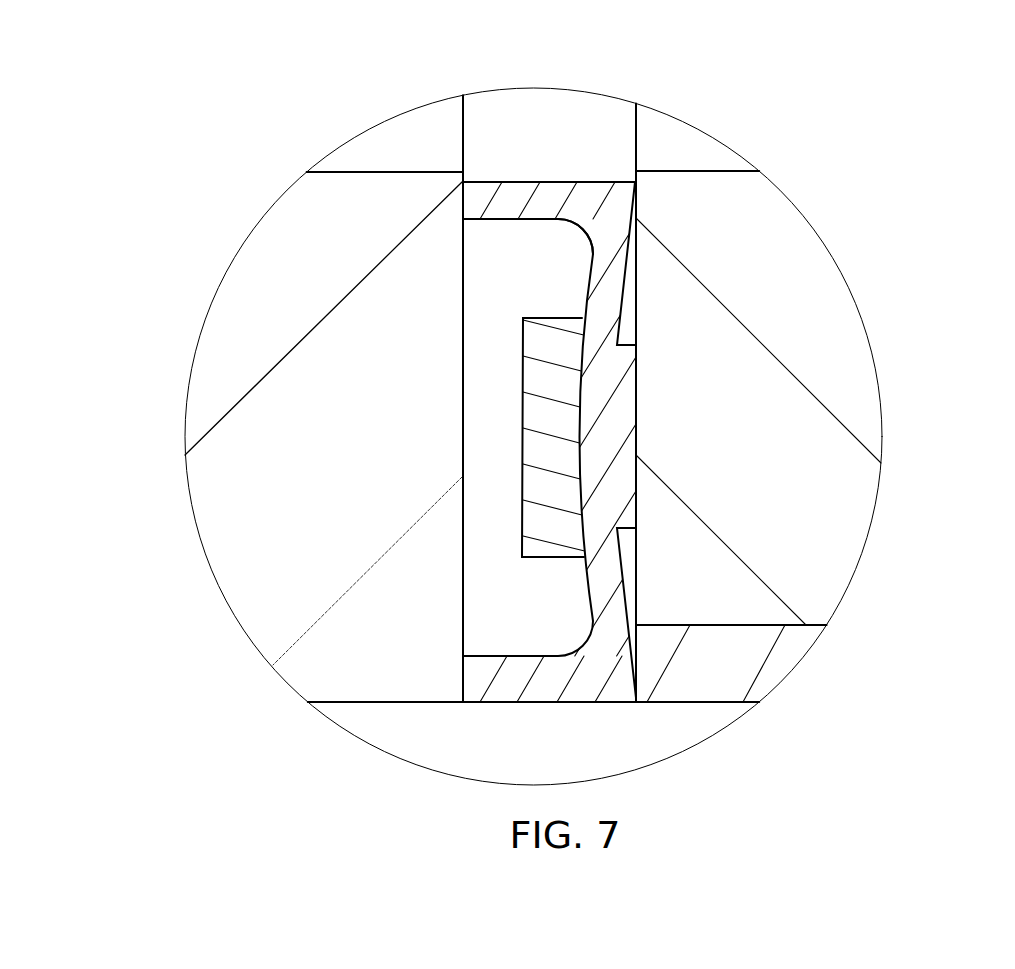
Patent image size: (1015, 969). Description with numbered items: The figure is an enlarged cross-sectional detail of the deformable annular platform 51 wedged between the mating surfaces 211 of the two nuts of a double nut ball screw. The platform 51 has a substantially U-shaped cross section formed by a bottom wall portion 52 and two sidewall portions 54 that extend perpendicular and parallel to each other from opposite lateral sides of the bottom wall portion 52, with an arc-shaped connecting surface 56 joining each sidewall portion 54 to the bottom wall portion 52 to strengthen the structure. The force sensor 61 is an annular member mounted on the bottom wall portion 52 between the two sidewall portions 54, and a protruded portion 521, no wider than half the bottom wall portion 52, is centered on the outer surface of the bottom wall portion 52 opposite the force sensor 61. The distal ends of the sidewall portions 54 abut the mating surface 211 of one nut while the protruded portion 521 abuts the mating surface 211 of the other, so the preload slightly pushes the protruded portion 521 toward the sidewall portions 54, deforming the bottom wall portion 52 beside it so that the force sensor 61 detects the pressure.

The mating surface 211 is at (463, 558).
The deformable annular platform 51 is at (529, 182).
The bottom wall portion 52 is at (630, 263).
The protruded portion 521 is at (636, 437).
The sidewall portion 54 is at (487, 182).
The arc-shaped connecting surface 56 is at (547, 219).
The force sensor 61 is at (520, 440).